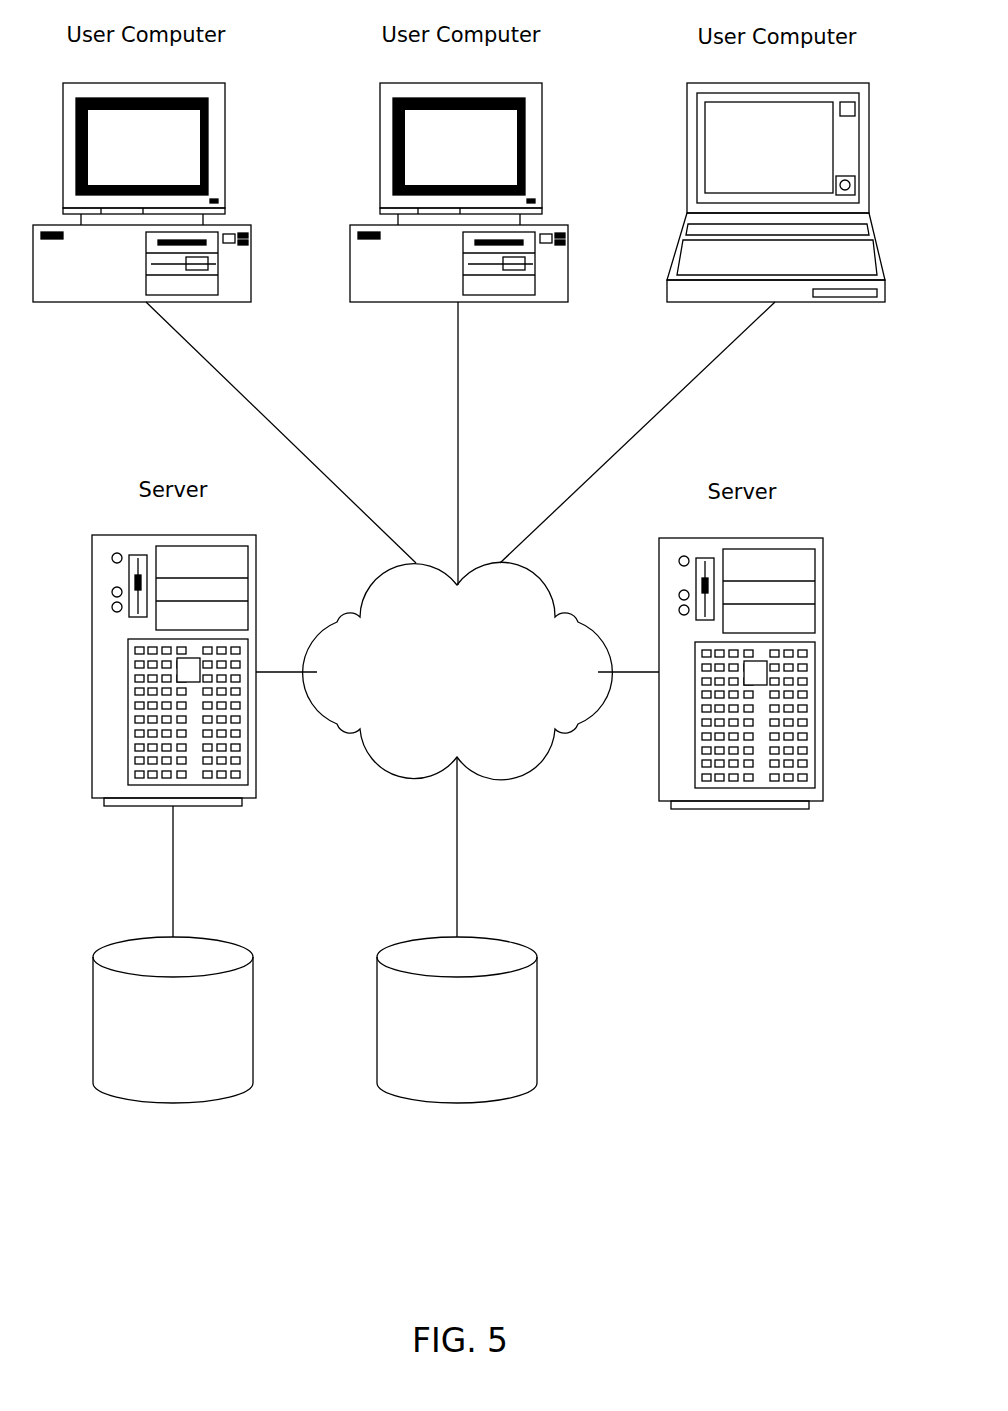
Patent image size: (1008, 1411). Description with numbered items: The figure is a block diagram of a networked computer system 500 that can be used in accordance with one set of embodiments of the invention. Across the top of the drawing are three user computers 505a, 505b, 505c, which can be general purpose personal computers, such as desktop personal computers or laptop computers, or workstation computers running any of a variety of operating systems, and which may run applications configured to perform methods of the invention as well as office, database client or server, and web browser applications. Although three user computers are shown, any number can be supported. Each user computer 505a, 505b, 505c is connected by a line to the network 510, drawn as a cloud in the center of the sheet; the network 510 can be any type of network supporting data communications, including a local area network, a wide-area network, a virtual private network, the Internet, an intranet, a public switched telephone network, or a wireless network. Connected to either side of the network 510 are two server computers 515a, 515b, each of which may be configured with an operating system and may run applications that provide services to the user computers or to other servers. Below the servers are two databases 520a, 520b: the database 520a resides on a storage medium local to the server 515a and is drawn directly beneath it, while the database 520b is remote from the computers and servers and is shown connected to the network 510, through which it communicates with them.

The system 500 is at (728, 1168).
The user computer 505a is at (253, 243).
The user computer 505b is at (350, 245).
The user computer 505c is at (686, 193).
The network 510 is at (497, 782).
The server 515a is at (92, 672).
The server 515b is at (825, 672).
The database 520a is at (172, 1103).
The database 520b is at (457, 1103).